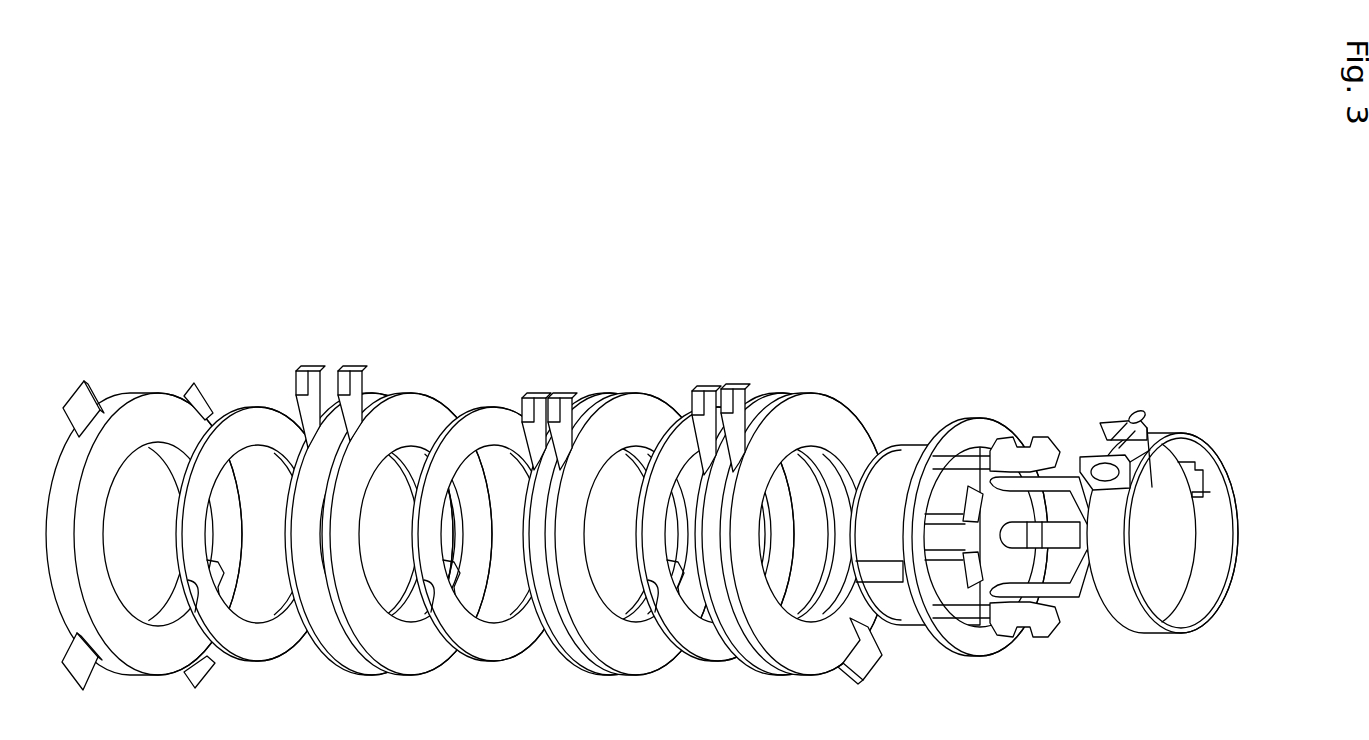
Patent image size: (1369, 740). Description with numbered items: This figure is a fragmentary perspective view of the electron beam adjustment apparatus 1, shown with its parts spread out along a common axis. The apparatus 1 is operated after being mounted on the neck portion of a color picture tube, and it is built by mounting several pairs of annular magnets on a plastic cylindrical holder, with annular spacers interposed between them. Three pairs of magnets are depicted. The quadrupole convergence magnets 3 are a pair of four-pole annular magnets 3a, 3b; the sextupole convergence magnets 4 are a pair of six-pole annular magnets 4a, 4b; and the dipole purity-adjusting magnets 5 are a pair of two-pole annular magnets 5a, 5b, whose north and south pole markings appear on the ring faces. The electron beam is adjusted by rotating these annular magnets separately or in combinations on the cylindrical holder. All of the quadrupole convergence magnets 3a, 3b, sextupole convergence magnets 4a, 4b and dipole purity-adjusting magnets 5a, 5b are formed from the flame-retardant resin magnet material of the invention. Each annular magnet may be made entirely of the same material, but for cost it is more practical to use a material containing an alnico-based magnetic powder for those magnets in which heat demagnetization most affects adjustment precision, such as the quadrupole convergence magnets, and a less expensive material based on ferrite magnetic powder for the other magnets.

The electron beam adjustment apparatus 1 is at (642, 436).
The quadrupole convergence magnets 3 is at (389, 428).
The quadrupole convergence magnet 3a is at (322, 382).
The quadrupole convergence magnet 3b is at (365, 380).
The sextupole convergence magnets 4 is at (613, 442).
The sextupole convergence magnet 4a is at (535, 400).
The sextupole convergence magnet 4b is at (565, 397).
The dipole purity-adjusting magnets 5 is at (787, 449).
The dipole purity-adjusting magnet 5a is at (706, 393).
The dipole purity-adjusting magnet 5b is at (755, 393).